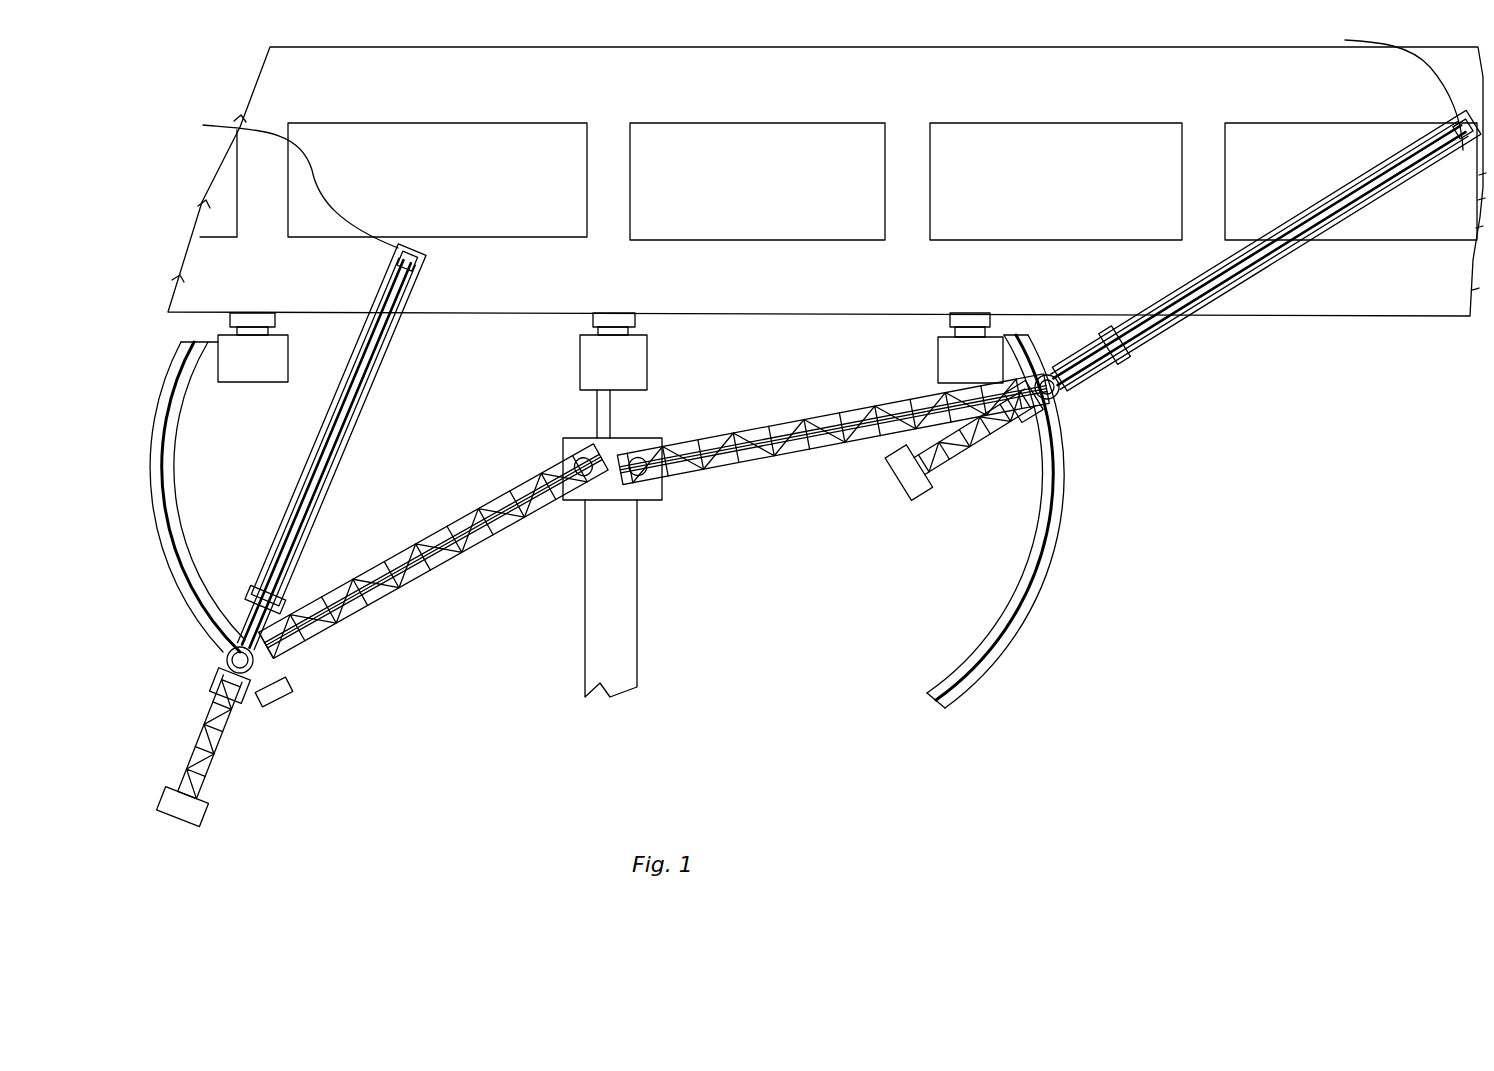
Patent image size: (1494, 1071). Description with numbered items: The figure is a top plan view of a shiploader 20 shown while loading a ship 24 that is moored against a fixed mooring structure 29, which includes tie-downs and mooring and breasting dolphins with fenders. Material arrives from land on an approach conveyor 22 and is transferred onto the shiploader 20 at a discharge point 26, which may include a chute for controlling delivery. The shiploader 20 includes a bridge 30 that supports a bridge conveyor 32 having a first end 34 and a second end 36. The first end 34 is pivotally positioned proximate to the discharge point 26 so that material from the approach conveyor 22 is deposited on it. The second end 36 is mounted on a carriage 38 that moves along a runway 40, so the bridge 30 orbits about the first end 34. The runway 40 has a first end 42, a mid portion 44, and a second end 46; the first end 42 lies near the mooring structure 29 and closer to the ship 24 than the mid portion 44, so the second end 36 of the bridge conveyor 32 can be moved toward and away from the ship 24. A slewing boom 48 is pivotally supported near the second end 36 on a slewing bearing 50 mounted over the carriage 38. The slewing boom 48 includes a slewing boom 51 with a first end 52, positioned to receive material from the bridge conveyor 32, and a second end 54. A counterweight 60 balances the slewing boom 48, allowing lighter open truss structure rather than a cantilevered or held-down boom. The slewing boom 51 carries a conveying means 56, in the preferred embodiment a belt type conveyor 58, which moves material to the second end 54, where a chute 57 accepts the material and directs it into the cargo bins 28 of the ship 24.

The shiploader 20 is at (1167, 727).
The approach conveyor 22 is at (637, 622).
The ship 24 is at (705, 318).
The discharge point 26 is at (617, 455).
The cargo bins 28 is at (482, 212).
The mooring structure 29 is at (328, 350).
The bridge 30 is at (457, 513).
The bridge conveyor 32 is at (398, 574).
The first end of the bridge conveyor 34 is at (563, 470).
The second end of the bridge conveyor 36 is at (297, 612).
The carriage 38 is at (280, 667).
The runway 40 is at (173, 580).
The first end of the runway 42 is at (173, 340).
The mid portion of the runway 44 is at (178, 465).
The second end of the runway 46 is at (267, 693).
The slewing boom 48 is at (303, 463).
The slewing bearing 50 is at (222, 665).
The slewing boom 51 is at (353, 443).
The first end of the slewing boom 52 is at (230, 615).
The second end of the slewing boom 54 is at (415, 265).
The conveying means 56 is at (322, 482).
The chute 57 is at (815, 133).
The belt type conveyor 58 is at (335, 408).
The counterweight 60 is at (918, 487).